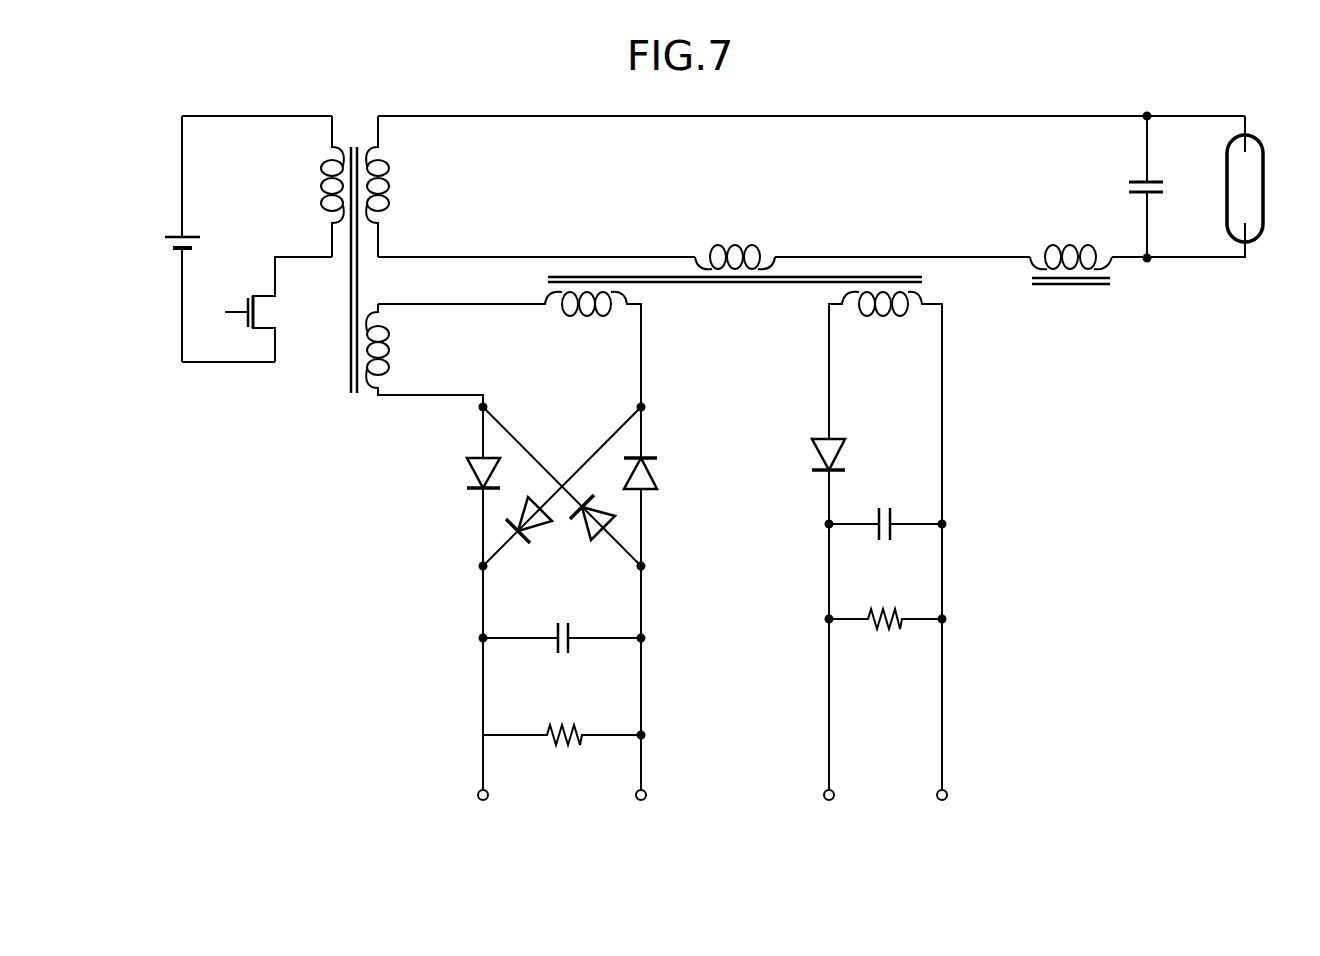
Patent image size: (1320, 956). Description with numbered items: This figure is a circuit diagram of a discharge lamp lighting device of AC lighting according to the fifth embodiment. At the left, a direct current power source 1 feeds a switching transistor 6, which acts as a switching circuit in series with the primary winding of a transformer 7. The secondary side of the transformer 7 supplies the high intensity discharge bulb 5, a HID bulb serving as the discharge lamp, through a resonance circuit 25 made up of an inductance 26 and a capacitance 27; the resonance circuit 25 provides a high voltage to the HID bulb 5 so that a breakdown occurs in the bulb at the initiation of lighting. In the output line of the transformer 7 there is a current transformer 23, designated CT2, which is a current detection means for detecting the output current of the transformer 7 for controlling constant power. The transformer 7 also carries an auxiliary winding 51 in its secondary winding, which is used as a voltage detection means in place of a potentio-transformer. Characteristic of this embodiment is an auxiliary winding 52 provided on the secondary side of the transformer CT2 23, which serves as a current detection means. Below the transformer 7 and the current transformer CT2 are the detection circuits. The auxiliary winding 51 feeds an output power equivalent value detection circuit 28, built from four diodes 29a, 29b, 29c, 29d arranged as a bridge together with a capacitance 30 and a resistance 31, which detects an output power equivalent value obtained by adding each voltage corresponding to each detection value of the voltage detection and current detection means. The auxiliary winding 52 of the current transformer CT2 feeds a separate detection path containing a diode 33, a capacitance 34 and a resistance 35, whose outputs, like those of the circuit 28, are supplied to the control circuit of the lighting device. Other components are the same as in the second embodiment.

The direct current power source 1 is at (165, 242).
The high intensity discharge bulb 5 is at (1266, 187).
The switching transistor 6 is at (277, 316).
The transformer 7 is at (402, 267).
The current transformer 23 is at (745, 242).
The resonance circuit 25 is at (1101, 272).
The inductance 26 is at (1078, 242).
The capacitance 27 is at (1168, 190).
The output power equivalent value detection circuit 28 is at (596, 591).
The diode 29a is at (476, 456).
The diode 29b is at (655, 456).
The diode 29c is at (520, 545).
The diode 29d is at (601, 545).
The capacitance 30 is at (563, 660).
The resistance 31 is at (564, 761).
The diode 33 is at (816, 434).
The capacitance 34 is at (885, 546).
The resistance 35 is at (885, 636).
The auxiliary winding 51 is at (372, 398).
The auxiliary winding 52 is at (545, 300).
The current transformer CT2 is at (676, 397).